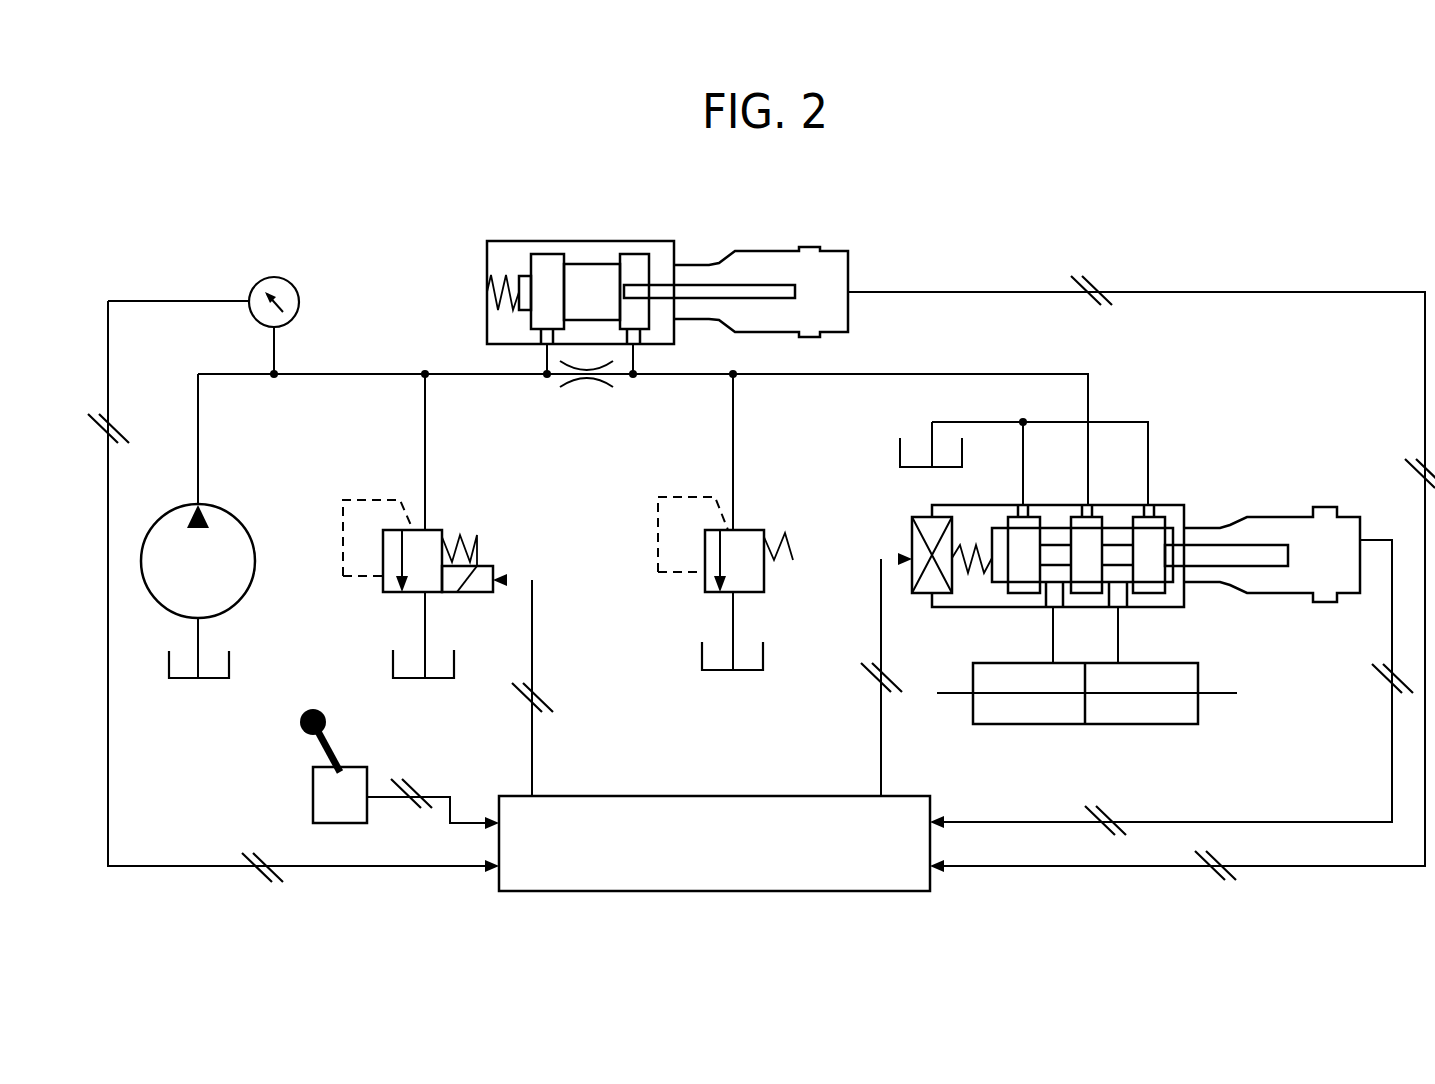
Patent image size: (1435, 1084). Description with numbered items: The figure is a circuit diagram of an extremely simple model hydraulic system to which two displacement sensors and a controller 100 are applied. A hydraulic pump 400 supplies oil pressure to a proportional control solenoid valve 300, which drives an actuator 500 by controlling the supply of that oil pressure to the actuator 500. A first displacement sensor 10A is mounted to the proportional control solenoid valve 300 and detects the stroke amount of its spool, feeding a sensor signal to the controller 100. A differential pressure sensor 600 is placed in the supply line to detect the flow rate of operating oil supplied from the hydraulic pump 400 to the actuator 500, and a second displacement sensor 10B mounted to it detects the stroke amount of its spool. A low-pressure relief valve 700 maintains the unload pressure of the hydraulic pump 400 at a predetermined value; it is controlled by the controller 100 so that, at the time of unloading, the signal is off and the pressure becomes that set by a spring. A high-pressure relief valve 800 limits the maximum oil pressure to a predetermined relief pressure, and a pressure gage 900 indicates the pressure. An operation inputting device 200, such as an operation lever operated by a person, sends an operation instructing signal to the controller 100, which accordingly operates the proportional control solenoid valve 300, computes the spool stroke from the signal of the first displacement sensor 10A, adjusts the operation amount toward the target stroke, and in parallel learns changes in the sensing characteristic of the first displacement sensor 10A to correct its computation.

The controller 100 is at (752, 796).
The operation inputting device 200 is at (355, 767).
The proportional control solenoid valve 300 is at (1172, 500).
The hydraulic pump 400 is at (230, 508).
The actuator 500 is at (1155, 724).
The differential pressure sensor 600 is at (588, 241).
The low-pressure relief valve 700 is at (433, 530).
The high-pressure relief valve 800 is at (745, 530).
The pressure gage 900 is at (297, 303).
The first displacement sensor 10A is at (1255, 515).
The second displacement sensor 10B is at (758, 251).